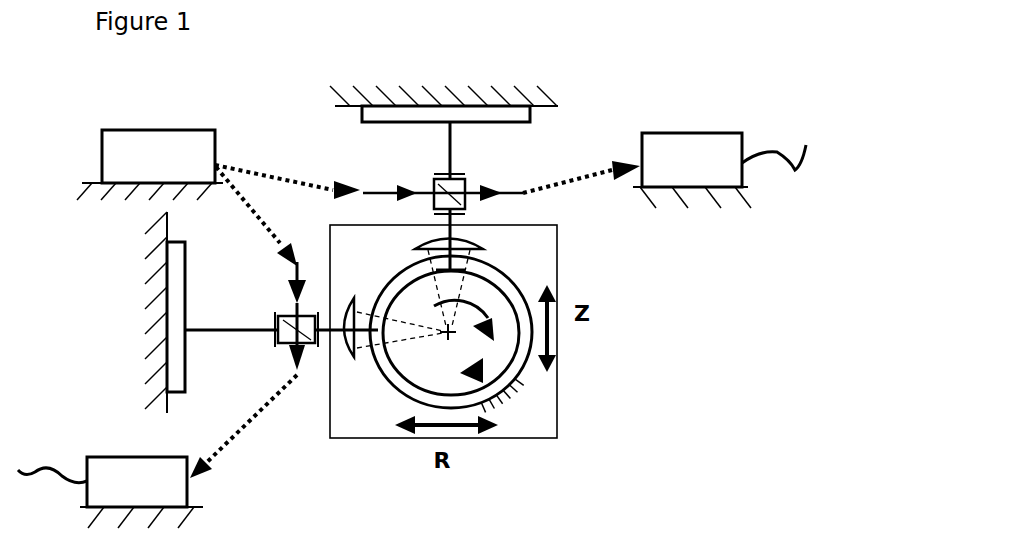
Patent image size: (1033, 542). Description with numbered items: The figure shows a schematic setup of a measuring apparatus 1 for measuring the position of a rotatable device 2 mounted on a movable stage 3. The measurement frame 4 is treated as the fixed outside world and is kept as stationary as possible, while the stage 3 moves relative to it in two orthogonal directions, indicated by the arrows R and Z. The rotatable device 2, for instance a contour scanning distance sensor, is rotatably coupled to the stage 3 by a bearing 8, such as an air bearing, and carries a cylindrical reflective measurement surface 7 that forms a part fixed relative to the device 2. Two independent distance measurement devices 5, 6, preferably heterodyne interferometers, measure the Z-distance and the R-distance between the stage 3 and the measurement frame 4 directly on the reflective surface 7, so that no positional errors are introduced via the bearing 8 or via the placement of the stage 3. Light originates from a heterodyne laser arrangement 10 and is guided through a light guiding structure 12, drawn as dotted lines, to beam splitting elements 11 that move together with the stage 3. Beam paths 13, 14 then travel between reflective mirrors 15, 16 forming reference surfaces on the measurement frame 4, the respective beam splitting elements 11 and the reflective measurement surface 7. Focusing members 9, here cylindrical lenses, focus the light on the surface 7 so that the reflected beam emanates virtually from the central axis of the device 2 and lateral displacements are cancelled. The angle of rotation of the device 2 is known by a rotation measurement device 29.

The measuring apparatus 1 is at (633, 334).
The rotatable device 2 is at (426, 367).
The stage 3 is at (348, 415).
The measurement frame 4 is at (540, 80).
The distance measurement device 5 is at (658, 165).
The distance measurement device 6 is at (111, 480).
The reflective measurement surface 7 is at (467, 264).
The bearing 8 is at (517, 280).
The focusing members 9 is at (432, 235).
The heterodyne laser arrangement 10 is at (150, 165).
The beam splitting elements 11 is at (465, 175).
The light guiding structure 12 is at (280, 167).
The beam path 13 is at (448, 155).
The beam path 14 is at (167, 297).
The reflective mirror 15 is at (457, 112).
The reflective mirror 16 is at (175, 353).
The rotation measurement device 29 is at (517, 395).